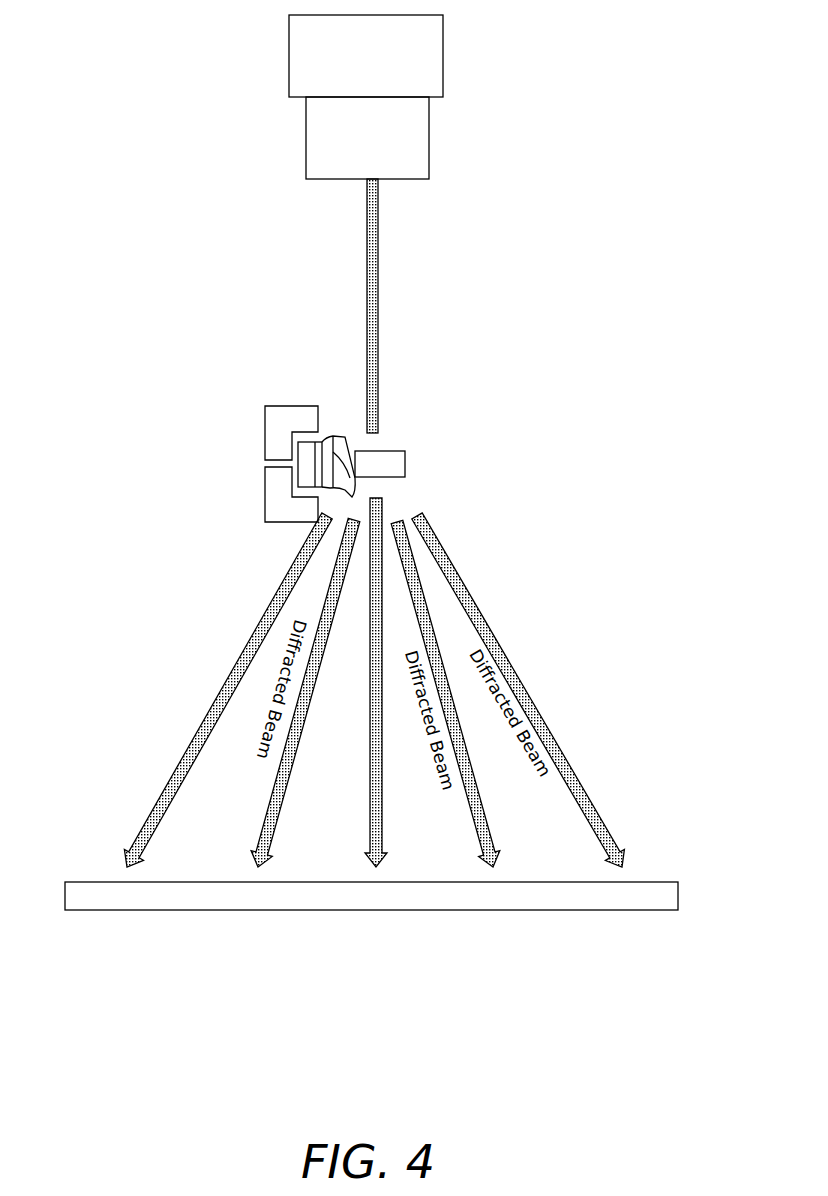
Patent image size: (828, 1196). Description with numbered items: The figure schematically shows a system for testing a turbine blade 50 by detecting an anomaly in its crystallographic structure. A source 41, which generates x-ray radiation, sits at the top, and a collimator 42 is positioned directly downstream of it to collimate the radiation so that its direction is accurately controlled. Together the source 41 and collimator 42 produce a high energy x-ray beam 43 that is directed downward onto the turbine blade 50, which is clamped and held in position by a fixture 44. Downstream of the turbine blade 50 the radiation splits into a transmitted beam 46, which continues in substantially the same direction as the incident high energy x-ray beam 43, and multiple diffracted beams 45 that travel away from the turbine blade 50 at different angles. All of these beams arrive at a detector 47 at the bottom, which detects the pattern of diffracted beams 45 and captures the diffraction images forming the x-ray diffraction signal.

The source 41 is at (443, 43).
The collimator 42 is at (429, 134).
The high energy x-ray beam 43 is at (378, 372).
The fixture 44 is at (283, 405).
The diffracted beams 45 is at (298, 561).
The transmitted beam 46 is at (382, 824).
The detector 47 is at (467, 911).
The turbine blade 50 is at (393, 450).